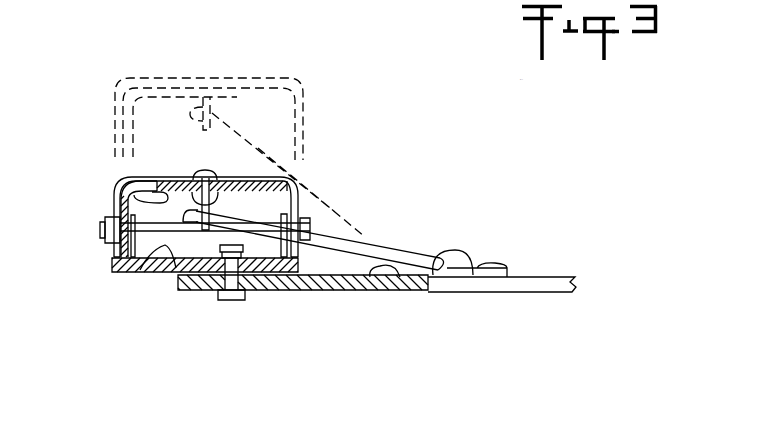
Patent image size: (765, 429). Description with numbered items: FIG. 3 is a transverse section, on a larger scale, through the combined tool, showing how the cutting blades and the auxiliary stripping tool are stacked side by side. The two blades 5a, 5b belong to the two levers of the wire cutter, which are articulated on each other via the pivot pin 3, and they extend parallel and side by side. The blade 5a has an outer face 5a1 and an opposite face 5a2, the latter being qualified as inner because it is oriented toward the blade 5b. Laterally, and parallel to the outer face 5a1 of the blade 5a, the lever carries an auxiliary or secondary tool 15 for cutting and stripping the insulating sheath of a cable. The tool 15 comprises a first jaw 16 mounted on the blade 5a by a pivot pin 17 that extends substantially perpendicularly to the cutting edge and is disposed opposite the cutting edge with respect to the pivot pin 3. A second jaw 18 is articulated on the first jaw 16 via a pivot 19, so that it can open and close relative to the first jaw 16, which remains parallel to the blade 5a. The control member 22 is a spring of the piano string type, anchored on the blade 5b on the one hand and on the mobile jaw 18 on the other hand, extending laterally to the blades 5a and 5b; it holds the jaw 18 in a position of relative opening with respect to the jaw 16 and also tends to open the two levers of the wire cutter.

The pivot pin 3 is at (230, 302).
The blade 5a is at (112, 263).
The outer face 5a1 is at (155, 256).
The inner face 5a2 is at (168, 272).
The blade 5b is at (482, 293).
The auxiliary tool 15 is at (176, 170).
The first jaw 16 is at (261, 167).
The pivot pin 17 is at (104, 231).
The second jaw 18 is at (128, 199).
The pivot 19 is at (206, 176).
The control member 22 is at (372, 248).